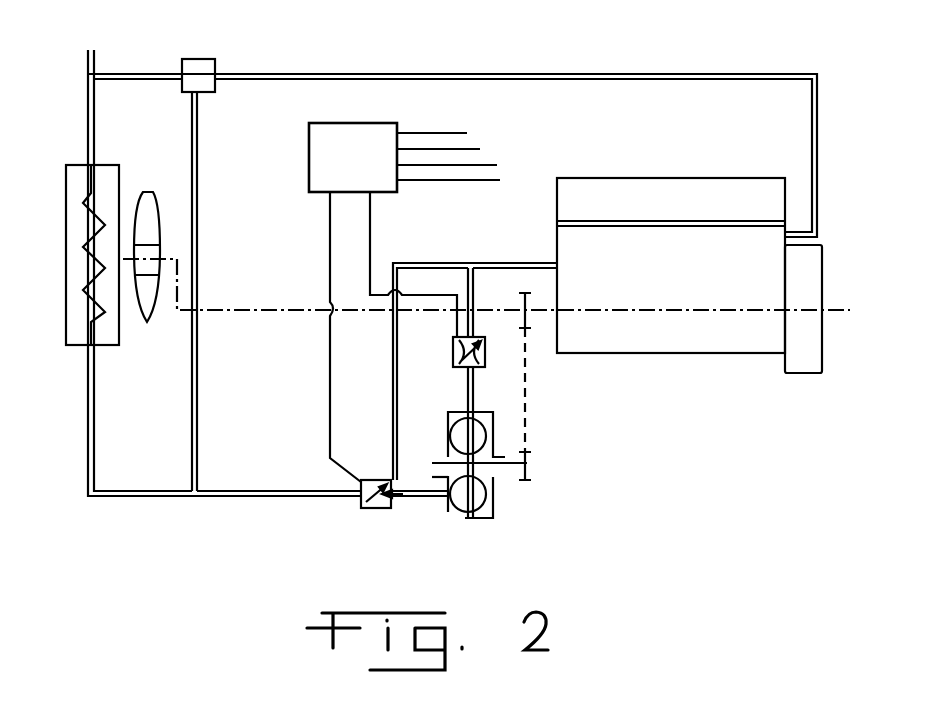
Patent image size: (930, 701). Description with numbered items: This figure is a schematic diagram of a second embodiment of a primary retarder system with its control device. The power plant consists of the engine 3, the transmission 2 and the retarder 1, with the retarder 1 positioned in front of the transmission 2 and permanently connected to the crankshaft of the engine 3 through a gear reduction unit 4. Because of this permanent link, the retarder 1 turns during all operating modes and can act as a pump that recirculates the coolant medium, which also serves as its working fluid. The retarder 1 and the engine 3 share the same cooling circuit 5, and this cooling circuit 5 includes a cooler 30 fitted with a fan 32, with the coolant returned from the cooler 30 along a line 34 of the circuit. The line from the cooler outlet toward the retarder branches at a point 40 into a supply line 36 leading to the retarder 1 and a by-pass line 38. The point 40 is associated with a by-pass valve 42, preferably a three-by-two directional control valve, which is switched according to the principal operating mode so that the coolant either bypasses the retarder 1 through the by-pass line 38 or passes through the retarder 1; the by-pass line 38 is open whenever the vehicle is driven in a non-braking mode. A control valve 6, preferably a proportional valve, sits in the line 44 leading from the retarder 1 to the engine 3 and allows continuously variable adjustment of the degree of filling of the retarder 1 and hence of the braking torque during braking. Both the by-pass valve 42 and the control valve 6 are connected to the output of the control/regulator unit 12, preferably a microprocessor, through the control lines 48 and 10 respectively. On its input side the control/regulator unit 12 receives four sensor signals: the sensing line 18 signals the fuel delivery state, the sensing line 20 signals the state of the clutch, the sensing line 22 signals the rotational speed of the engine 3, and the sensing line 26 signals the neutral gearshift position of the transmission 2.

The retarder 1 is at (493, 497).
The transmission 2 is at (807, 365).
The engine 3 is at (683, 343).
The gear reduction unit 4 is at (527, 408).
The cooling circuit 5 is at (198, 342).
The control valve 6 is at (452, 345).
The control line 10 is at (371, 214).
The control/regulator unit 12 is at (308, 158).
The sensing line 18 is at (467, 133).
The sensing line 20 is at (480, 149).
The sensing line 22 is at (470, 181).
The sensing line 26 is at (497, 165).
The cooler 30 is at (103, 341).
The fan 32 is at (147, 318).
The coolant return line 34 is at (275, 497).
The supply line 36 is at (448, 505).
The by-pass line 38 is at (393, 410).
The branch point 40 is at (405, 499).
The by-pass valve 42 is at (380, 508).
The line 44 is at (474, 306).
The control line 48 is at (329, 218).